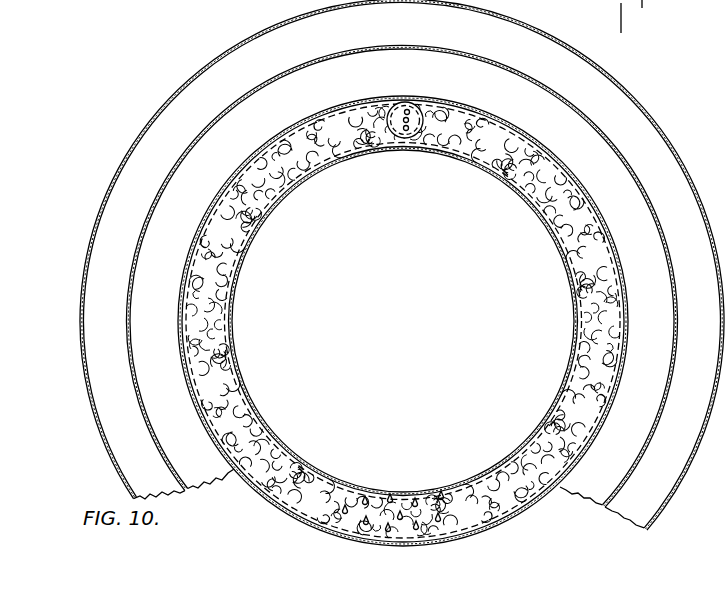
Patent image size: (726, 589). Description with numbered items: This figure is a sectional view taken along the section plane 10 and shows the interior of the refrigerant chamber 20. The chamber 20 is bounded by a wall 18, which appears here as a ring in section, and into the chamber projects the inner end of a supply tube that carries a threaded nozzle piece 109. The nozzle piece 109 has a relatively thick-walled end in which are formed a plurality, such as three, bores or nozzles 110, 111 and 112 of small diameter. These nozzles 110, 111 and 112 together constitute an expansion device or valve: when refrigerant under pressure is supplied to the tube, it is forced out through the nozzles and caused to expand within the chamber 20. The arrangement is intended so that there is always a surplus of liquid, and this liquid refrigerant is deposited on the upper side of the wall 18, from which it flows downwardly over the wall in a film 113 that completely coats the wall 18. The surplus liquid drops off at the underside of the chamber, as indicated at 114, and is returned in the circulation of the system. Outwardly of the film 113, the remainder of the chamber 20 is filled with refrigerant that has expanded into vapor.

The section plane 10 is at (611, 26).
The wall 18 is at (463, 153).
The chamber 20 is at (543, 152).
The nozzle piece 109 is at (460, 103).
The nozzle 110 is at (407, 109).
The nozzle 111 is at (417, 122).
The nozzle 112 is at (402, 125).
The film 113 is at (561, 226).
The surplus liquid drops 114 is at (441, 495).